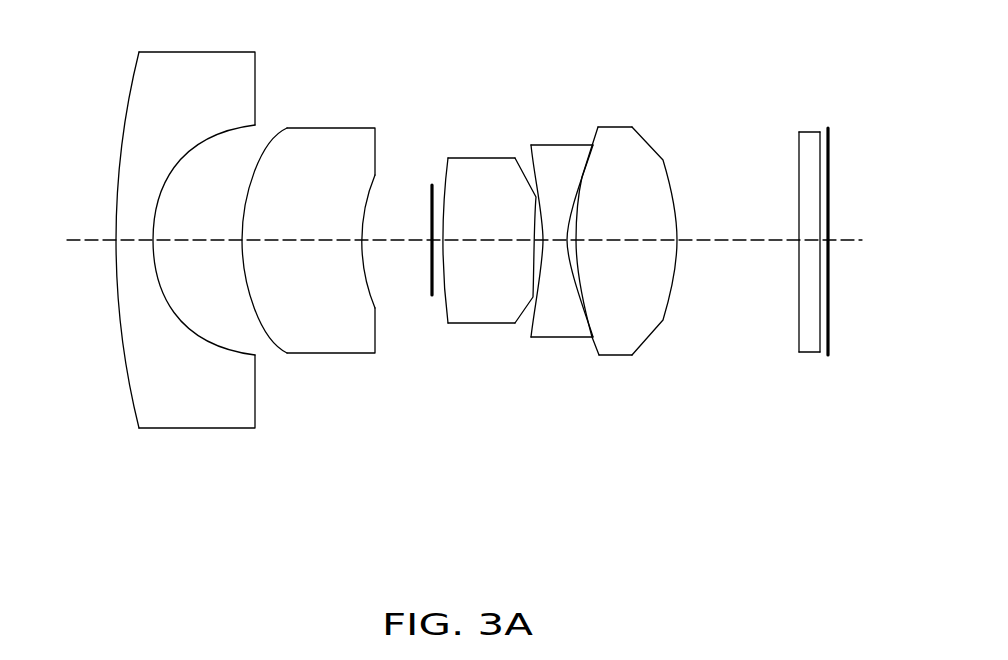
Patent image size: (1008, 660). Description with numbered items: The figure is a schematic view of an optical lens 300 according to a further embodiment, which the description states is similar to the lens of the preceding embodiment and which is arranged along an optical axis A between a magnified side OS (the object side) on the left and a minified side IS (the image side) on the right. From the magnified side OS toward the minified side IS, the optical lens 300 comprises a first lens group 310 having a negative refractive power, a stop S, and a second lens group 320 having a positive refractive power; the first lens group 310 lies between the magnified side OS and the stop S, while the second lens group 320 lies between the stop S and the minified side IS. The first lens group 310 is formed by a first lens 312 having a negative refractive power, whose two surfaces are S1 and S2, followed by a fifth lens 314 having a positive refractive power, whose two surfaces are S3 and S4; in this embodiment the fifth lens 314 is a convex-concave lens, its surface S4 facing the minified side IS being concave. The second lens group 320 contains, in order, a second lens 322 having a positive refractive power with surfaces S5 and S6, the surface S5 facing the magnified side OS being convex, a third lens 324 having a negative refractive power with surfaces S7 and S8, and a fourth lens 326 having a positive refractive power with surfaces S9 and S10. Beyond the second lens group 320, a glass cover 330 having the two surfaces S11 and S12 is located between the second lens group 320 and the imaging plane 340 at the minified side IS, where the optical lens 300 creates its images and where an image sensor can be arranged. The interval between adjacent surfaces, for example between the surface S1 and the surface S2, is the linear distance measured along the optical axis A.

The optical lens 300 is at (457, 281).
The first lens group 310 is at (243, 281).
The first lens 312 is at (183, 256).
The fifth lens 314 is at (317, 271).
The second lens group 320 is at (547, 264).
The second lens 322 is at (476, 236).
The third lens 324 is at (555, 236).
The fourth lens 326 is at (626, 243).
The glass cover 330 is at (797, 246).
The imaging plane 340 is at (829, 332).
The stop S is at (428, 280).
The optical axis A is at (92, 242).
The magnified side OS is at (42, 239).
The minified side IS is at (876, 239).
The surface of first lens S1 is at (130, 99).
The surface of first lens S2 is at (238, 135).
The surface of fifth lens S3 is at (260, 165).
The surface of fifth lens S4 is at (375, 182).
The surface of second lens S5 is at (445, 171).
The surface of second lens S6 is at (520, 168).
The surface of third lens S7 is at (537, 195).
The surface of third lens S8 is at (579, 175).
The surface of fourth lens S9 is at (593, 138).
The surface of fourth lens S10 is at (661, 171).
The surface of glass cover S11 is at (797, 161).
The surface of glass cover S12 is at (826, 146).